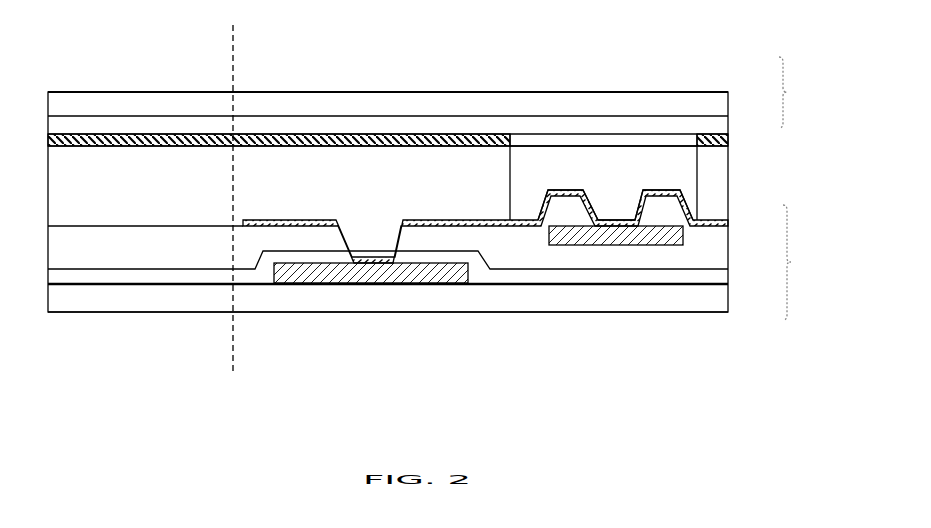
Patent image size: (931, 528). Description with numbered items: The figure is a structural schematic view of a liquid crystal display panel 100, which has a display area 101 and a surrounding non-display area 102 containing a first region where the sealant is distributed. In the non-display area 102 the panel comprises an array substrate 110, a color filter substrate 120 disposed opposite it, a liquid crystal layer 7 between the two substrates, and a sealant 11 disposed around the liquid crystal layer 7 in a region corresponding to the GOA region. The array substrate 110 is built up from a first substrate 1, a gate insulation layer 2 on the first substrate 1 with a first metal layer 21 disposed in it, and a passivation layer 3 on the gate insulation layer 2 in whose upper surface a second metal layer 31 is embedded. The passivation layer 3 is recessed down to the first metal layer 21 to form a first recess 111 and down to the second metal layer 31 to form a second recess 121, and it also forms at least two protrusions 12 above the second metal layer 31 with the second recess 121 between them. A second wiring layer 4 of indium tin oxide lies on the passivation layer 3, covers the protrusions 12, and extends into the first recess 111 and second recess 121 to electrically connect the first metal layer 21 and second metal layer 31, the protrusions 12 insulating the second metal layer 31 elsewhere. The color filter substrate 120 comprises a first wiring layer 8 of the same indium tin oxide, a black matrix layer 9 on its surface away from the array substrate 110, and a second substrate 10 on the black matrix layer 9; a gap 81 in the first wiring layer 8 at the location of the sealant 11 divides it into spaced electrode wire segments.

The liquid crystal display panel 100 is at (125, 43).
The second substrate 10 is at (687, 103).
The black matrix layer 9 is at (697, 128).
The first wiring layer 8 is at (300, 138).
The gap 81 is at (575, 138).
The sealant 11 is at (672, 173).
The liquid crystal layer 7 is at (432, 168).
The second wiring layer 4 is at (728, 222).
The protrusions 12 is at (668, 207).
The passivation layer 3 is at (713, 253).
The gate insulation layer 2 is at (708, 272).
The first substrate 1 is at (706, 297).
The first metal layer 21 is at (437, 282).
The second metal layer 31 is at (648, 246).
The color filter substrate 120 is at (799, 92).
The array substrate 110 is at (803, 262).
The display area 101 is at (102, 195).
The non-display area 102 is at (343, 185).
The first recess 111 is at (370, 248).
The second recess 121 is at (612, 212).